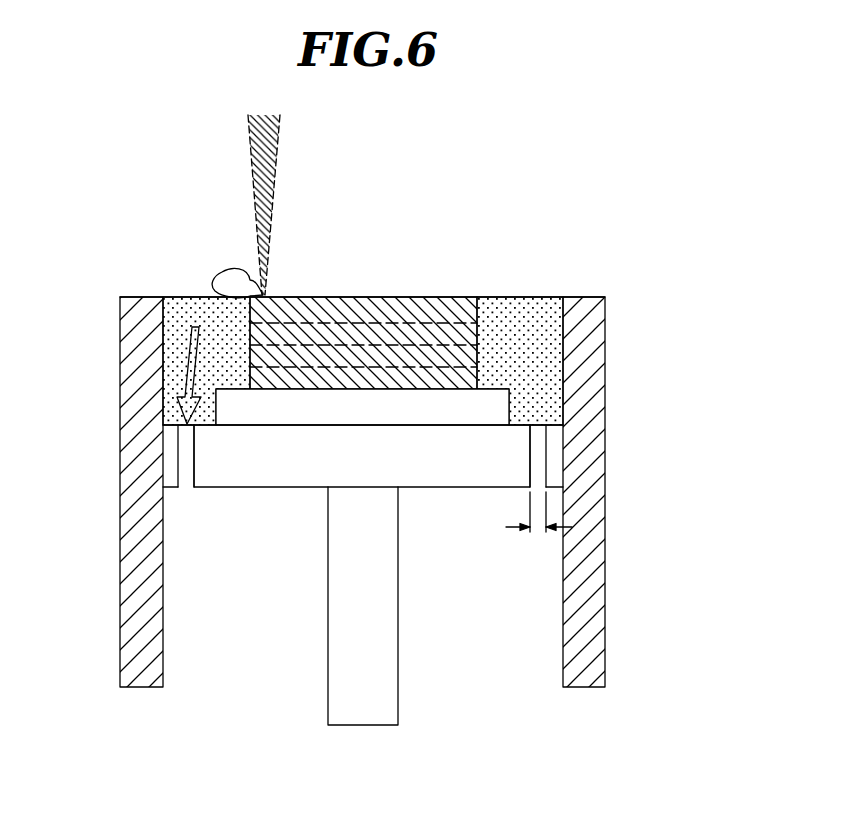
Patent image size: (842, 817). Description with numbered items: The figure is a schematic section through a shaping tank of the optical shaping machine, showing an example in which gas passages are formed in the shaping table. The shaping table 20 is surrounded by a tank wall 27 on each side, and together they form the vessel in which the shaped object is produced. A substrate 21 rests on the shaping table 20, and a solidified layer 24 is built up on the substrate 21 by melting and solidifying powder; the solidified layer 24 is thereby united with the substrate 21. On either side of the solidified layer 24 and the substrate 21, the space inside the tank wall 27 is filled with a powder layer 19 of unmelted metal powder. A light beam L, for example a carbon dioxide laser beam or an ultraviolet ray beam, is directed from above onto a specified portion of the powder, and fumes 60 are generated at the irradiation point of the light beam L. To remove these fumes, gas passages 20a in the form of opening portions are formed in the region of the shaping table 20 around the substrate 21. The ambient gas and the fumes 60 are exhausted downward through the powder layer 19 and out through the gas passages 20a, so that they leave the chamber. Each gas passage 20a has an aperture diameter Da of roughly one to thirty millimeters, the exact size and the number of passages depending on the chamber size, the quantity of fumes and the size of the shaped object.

The powder layer 19 is at (177, 331).
The shaping table 20 is at (267, 487).
The gas passages 20a is at (186, 459).
The substrate 21 is at (493, 401).
The solidified layer 24 is at (389, 327).
The tank wall 27 is at (123, 596).
The fumes 60 is at (223, 273).
The light beam L is at (272, 183).
The aperture diameter Da is at (539, 528).